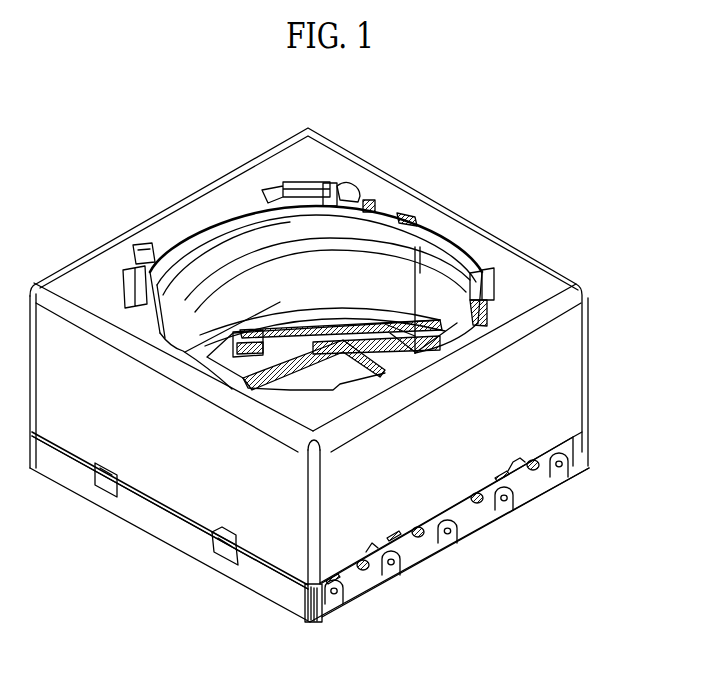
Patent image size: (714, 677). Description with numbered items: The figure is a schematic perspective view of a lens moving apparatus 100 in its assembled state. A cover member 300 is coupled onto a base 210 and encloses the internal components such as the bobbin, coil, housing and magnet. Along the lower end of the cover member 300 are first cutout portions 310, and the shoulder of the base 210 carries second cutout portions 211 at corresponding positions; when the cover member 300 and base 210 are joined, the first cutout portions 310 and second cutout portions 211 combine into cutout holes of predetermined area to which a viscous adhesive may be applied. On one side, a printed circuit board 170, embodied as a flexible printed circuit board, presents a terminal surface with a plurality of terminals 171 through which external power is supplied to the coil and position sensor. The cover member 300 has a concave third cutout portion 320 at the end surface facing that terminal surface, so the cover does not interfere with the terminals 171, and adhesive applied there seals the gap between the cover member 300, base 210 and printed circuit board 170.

The lens moving apparatus 100 is at (458, 242).
The cover member 300 is at (573, 358).
The base 210 is at (148, 522).
The second cutout portions 211 is at (214, 549).
The first cutout portions 310 is at (228, 537).
The printed circuit board 170 is at (482, 517).
The terminals 171 is at (447, 545).
The third cutout portion 320 is at (517, 463).